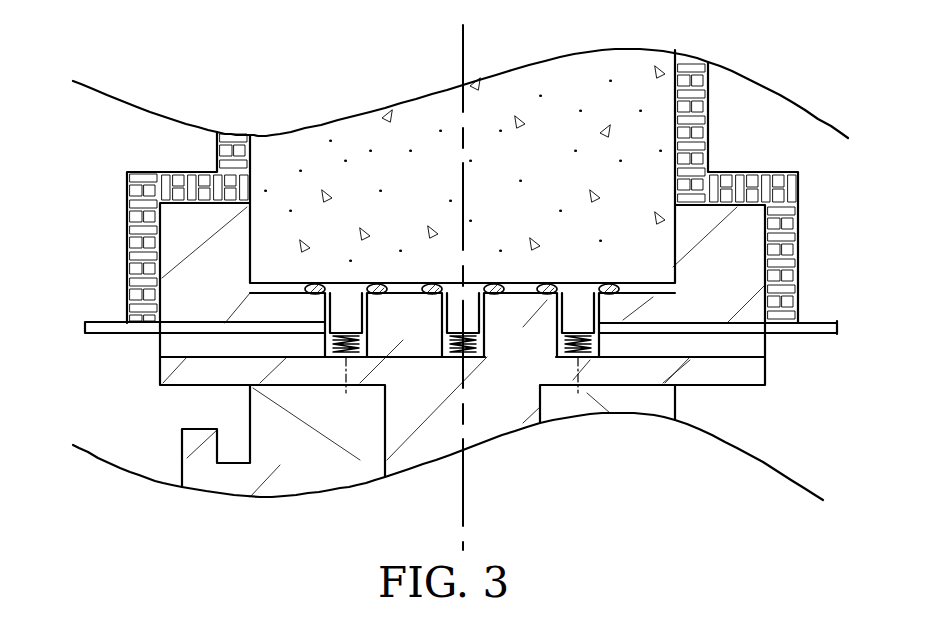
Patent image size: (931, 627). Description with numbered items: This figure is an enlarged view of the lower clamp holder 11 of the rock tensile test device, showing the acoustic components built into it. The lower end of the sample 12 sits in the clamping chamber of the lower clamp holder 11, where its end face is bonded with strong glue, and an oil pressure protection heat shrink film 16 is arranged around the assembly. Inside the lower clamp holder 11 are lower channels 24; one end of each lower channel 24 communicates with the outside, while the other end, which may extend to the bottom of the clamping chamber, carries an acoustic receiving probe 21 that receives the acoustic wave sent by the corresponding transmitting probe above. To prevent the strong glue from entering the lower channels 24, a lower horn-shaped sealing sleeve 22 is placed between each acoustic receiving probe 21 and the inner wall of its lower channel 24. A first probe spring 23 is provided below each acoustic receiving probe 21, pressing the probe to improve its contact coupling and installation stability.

The lower clamp holder 11 is at (195, 250).
The sample 12 is at (415, 128).
The oil pressure protection heat shrink film 16 is at (148, 203).
The acoustic receiving probe 21 is at (352, 303).
The lower horn-shaped sealing sleeve 22 is at (381, 285).
The first probe spring 23 is at (367, 350).
The lower channel 24 is at (188, 342).